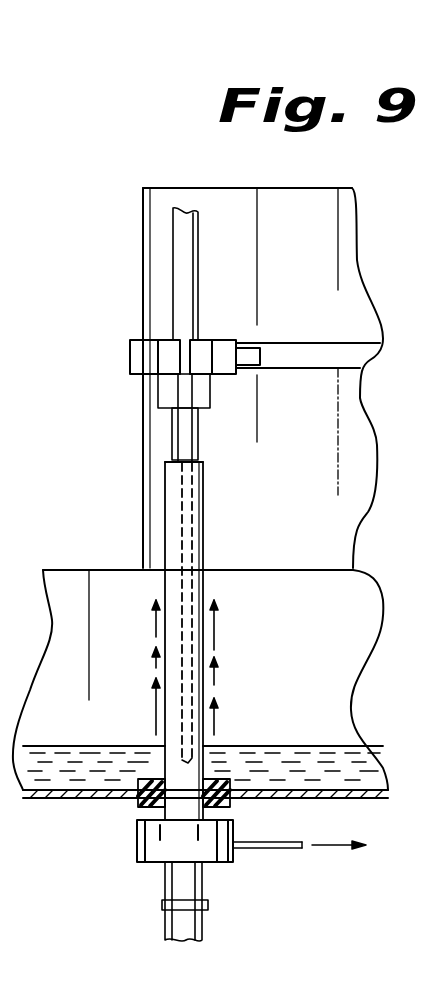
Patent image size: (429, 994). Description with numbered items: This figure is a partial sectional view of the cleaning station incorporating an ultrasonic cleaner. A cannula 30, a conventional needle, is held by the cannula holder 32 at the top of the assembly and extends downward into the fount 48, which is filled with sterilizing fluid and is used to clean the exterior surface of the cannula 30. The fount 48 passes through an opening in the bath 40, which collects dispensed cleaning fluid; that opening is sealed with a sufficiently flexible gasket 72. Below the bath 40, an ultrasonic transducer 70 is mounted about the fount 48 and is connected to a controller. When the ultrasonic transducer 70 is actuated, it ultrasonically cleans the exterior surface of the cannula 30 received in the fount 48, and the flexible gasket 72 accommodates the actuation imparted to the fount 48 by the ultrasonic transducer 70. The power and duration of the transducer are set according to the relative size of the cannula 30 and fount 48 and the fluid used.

The cannula 30 is at (185, 550).
The cannula holder 32 is at (137, 358).
The bath 40 is at (65, 587).
The fount 48 is at (168, 507).
The ultrasonic transducer 70 is at (140, 843).
The gasket 72 is at (143, 780).